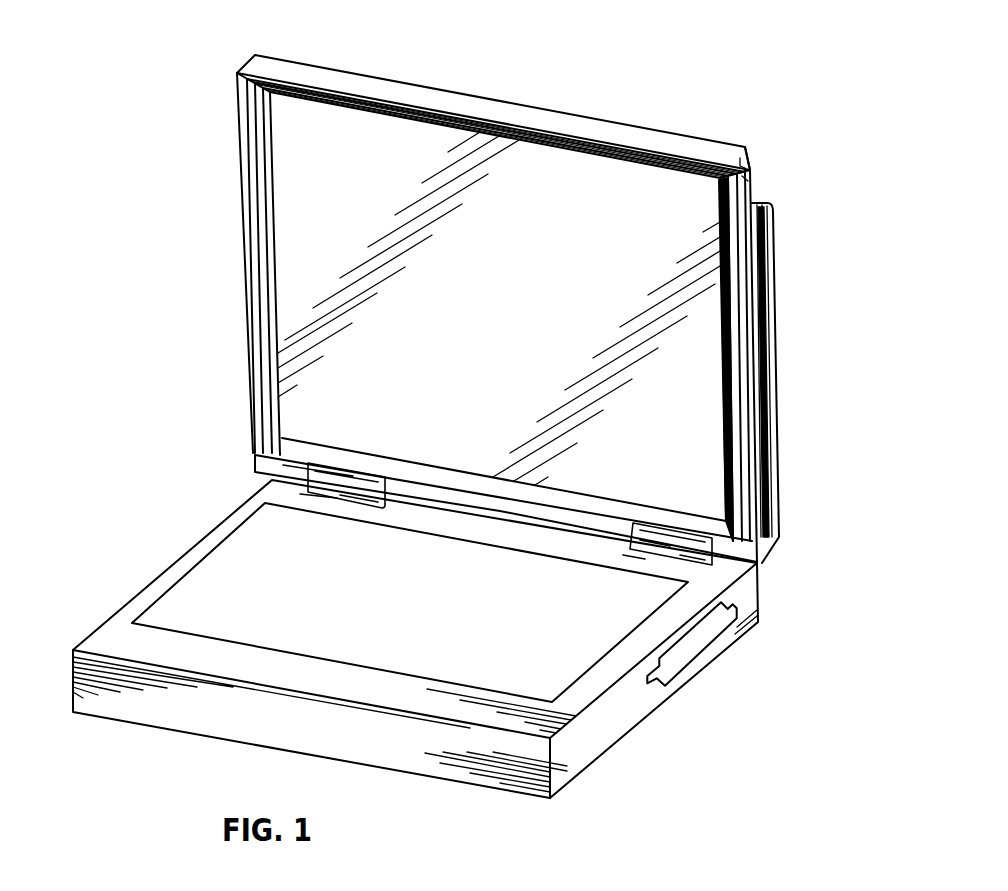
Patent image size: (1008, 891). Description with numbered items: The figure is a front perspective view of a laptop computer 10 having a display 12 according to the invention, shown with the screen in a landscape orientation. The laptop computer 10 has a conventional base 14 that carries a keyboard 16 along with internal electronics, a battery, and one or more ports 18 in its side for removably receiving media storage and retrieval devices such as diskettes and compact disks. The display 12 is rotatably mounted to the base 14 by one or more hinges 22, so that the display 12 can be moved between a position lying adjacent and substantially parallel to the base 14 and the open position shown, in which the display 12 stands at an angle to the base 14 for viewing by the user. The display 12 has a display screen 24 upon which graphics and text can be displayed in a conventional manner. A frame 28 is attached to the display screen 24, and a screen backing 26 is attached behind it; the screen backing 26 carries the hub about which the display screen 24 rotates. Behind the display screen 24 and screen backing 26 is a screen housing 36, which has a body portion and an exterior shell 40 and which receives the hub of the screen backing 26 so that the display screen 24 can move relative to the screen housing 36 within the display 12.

The laptop computer 10 is at (180, 313).
The display 12 is at (634, 112).
The base 14 is at (645, 718).
The keyboard 16 is at (448, 609).
The ports 18 is at (702, 638).
The hinges 22 is at (320, 490).
The display screen 24 is at (523, 299).
The screen backing 26 is at (750, 150).
The frame 28 is at (746, 181).
The screen housing 36 is at (833, 383).
The exterior shell 40 is at (776, 328).